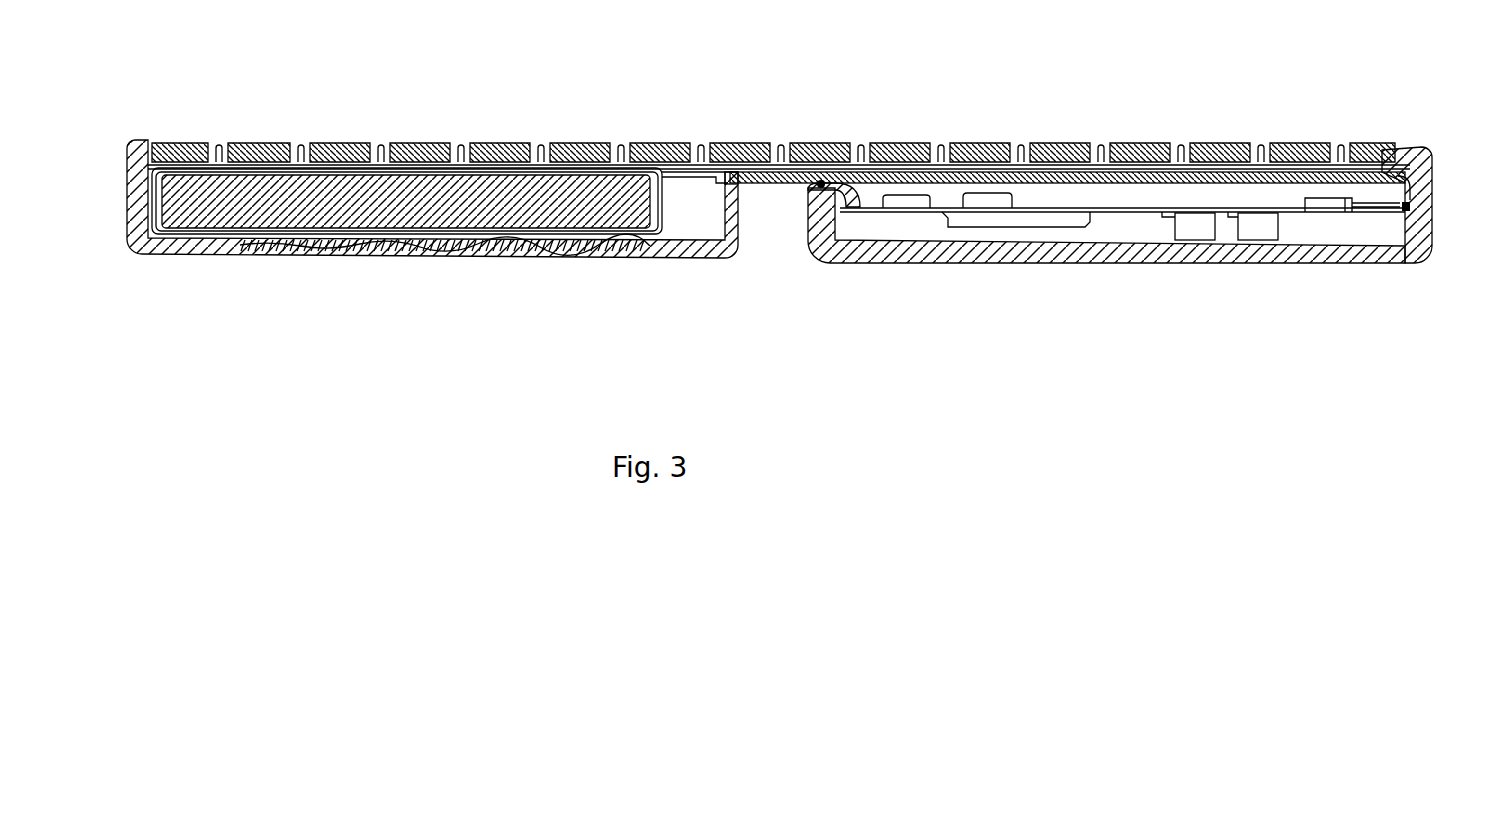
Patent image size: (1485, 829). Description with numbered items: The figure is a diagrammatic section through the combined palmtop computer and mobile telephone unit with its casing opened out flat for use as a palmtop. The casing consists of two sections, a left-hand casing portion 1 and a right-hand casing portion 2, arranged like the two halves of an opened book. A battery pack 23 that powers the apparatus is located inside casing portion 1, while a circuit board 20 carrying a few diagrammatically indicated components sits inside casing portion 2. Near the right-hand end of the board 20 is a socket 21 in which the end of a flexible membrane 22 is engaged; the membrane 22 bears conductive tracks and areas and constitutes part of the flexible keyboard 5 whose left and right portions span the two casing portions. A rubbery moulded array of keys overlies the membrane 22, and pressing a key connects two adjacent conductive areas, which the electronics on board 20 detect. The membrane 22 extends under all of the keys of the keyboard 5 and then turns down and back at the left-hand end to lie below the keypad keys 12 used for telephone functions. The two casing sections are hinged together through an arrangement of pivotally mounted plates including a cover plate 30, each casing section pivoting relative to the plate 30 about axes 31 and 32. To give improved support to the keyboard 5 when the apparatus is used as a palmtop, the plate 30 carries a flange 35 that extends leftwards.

The casing portion 1 is at (652, 250).
The casing portion 2 is at (960, 255).
The keyboard 5 is at (293, 146).
The keys 12 is at (305, 258).
The circuit board 20 is at (1152, 214).
The socket 21 is at (1330, 208).
The flexible membrane 22 is at (1410, 212).
The battery pack 23 is at (530, 208).
The cover plate 30 is at (789, 186).
The axis 31 is at (733, 180).
The axis 32 is at (821, 186).
The flange 35 is at (686, 178).